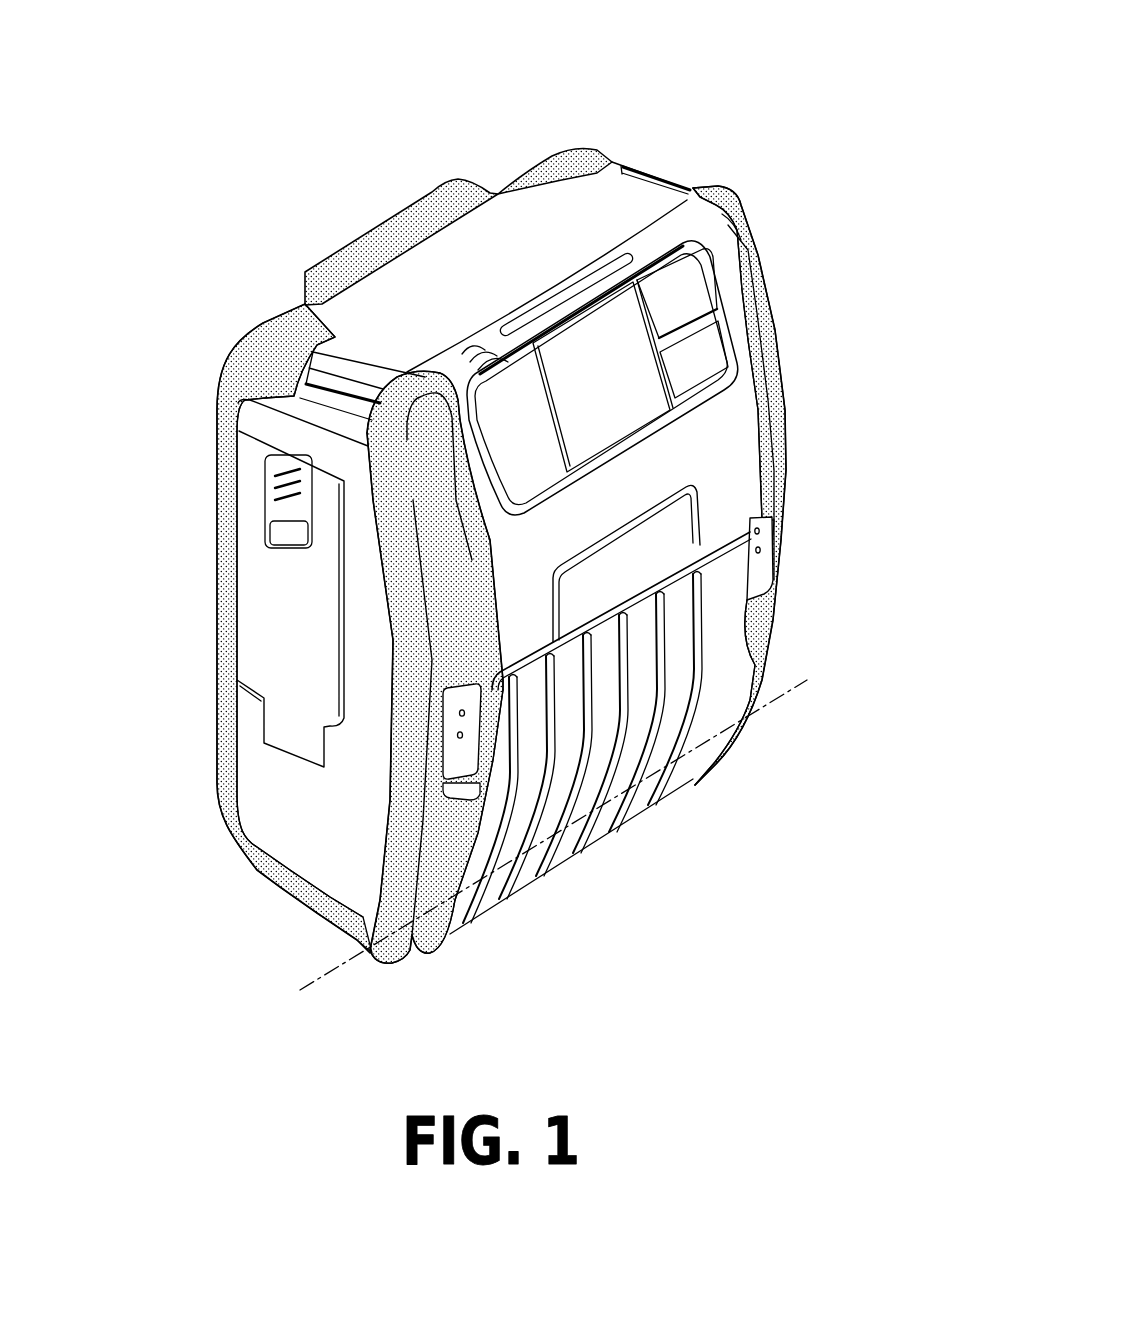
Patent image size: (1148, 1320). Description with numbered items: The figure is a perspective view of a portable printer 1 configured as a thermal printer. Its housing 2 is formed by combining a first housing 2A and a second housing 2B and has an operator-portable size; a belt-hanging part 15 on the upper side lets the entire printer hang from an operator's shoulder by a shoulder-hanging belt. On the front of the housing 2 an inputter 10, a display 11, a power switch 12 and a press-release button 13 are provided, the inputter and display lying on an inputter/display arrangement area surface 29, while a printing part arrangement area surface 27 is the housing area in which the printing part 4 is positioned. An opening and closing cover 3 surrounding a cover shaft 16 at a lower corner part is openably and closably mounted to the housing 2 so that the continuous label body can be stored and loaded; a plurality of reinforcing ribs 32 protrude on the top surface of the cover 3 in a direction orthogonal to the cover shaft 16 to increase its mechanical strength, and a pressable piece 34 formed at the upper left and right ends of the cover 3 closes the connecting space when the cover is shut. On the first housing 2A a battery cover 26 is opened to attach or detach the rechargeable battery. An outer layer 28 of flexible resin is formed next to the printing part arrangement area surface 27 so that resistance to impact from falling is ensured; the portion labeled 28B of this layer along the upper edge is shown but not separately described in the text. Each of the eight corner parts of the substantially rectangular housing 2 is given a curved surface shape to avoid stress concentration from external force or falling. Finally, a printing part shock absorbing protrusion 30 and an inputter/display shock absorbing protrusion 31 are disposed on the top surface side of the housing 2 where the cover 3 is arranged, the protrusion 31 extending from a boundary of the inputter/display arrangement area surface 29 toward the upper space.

The portable printer 1 is at (716, 149).
The housing 2 is at (688, 55).
The first housing 2A is at (235, 898).
The second housing 2B is at (643, 247).
The opening and closing cover 3 is at (568, 856).
The printing part 4 is at (666, 549).
The inputter 10 is at (692, 270).
The display 11 is at (570, 350).
The power switch 12 is at (503, 397).
The press-release button 13 is at (605, 565).
The belt-hanging part 15 is at (310, 358).
The cover shaft 16 is at (320, 985).
The battery cover 26 is at (260, 607).
The printing part arrangement area surface 27 is at (708, 450).
The outer layer 28 is at (520, 173).
The upper protective bumper member 28B is at (350, 253).
The inputter/display arrangement area surface 29 is at (543, 292).
The printing part shock absorbing protrusion 30 is at (784, 442).
The inputter/display shock absorbing protrusion 31 is at (747, 236).
The reinforcing ribs 32 is at (540, 882).
The pressable piece 34 is at (765, 560).